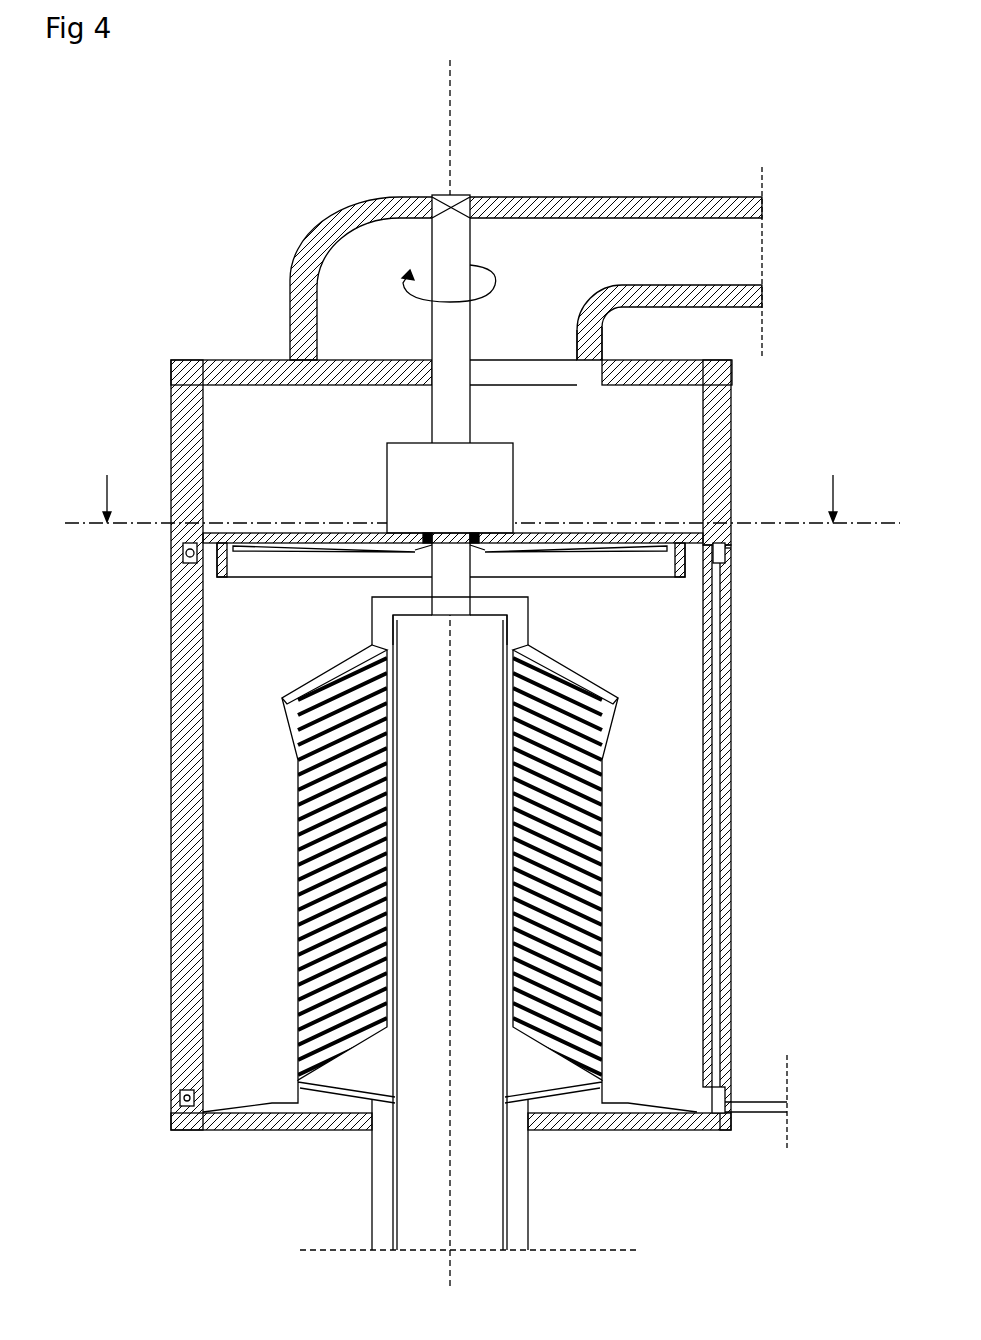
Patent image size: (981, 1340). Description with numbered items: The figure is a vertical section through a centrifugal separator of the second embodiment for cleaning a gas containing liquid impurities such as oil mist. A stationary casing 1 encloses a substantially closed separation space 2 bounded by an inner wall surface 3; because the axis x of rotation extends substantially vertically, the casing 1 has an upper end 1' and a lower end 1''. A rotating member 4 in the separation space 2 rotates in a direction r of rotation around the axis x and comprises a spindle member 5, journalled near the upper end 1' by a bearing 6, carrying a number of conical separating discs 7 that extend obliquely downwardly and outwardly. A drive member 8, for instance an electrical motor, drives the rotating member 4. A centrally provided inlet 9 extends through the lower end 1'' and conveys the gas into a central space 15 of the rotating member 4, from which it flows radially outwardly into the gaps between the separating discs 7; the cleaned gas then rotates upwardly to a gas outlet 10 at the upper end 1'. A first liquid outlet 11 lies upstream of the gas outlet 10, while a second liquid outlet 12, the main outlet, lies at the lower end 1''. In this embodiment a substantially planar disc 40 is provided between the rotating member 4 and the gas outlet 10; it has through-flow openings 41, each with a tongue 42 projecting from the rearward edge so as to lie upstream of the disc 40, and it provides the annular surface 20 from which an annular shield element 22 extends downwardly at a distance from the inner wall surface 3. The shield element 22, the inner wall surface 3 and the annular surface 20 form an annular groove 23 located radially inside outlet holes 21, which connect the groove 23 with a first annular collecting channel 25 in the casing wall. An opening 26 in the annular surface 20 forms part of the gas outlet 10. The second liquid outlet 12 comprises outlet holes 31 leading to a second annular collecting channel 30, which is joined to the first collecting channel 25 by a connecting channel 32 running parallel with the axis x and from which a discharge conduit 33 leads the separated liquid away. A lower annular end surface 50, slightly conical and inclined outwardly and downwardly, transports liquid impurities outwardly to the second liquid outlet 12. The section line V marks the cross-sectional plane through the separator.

The stationary casing 1 is at (406, 745).
The upper end 1' is at (442, 335).
The lower end 1'' is at (451, 1156).
The separation space 2 is at (247, 787).
The inner wall surface 3 is at (218, 752).
The rotating member 4 is at (292, 836).
The spindle member 5 is at (440, 408).
The bearing 6 is at (425, 205).
The separating discs 7 is at (298, 910).
The drive member 8 is at (410, 480).
The inlet 9 is at (425, 1130).
The gas outlet 10 is at (710, 247).
The first liquid outlet 11 is at (695, 583).
The second liquid outlet 12 is at (690, 1072).
The central space 15 is at (490, 822).
The annular surface 20 is at (667, 547).
The outlet hole 21 is at (188, 560).
The annular shield element 22 is at (693, 563).
The annular groove 23 is at (212, 572).
The first annular collecting channel 25 is at (183, 548).
The opening 26 is at (490, 365).
The second annular collecting channel 30 is at (726, 548).
The outlet hole 31 is at (190, 1110).
The connecting channel 32 is at (722, 840).
The discharge conduit 33 is at (750, 1112).
The disc 40 is at (524, 538).
The through-flow openings 41 is at (285, 545).
The tongue 42 is at (365, 550).
The lower annular end surface 50 is at (272, 1103).
The axis of rotation x is at (445, 85).
The direction of rotation r is at (402, 282).
The section line V is at (482, 499).